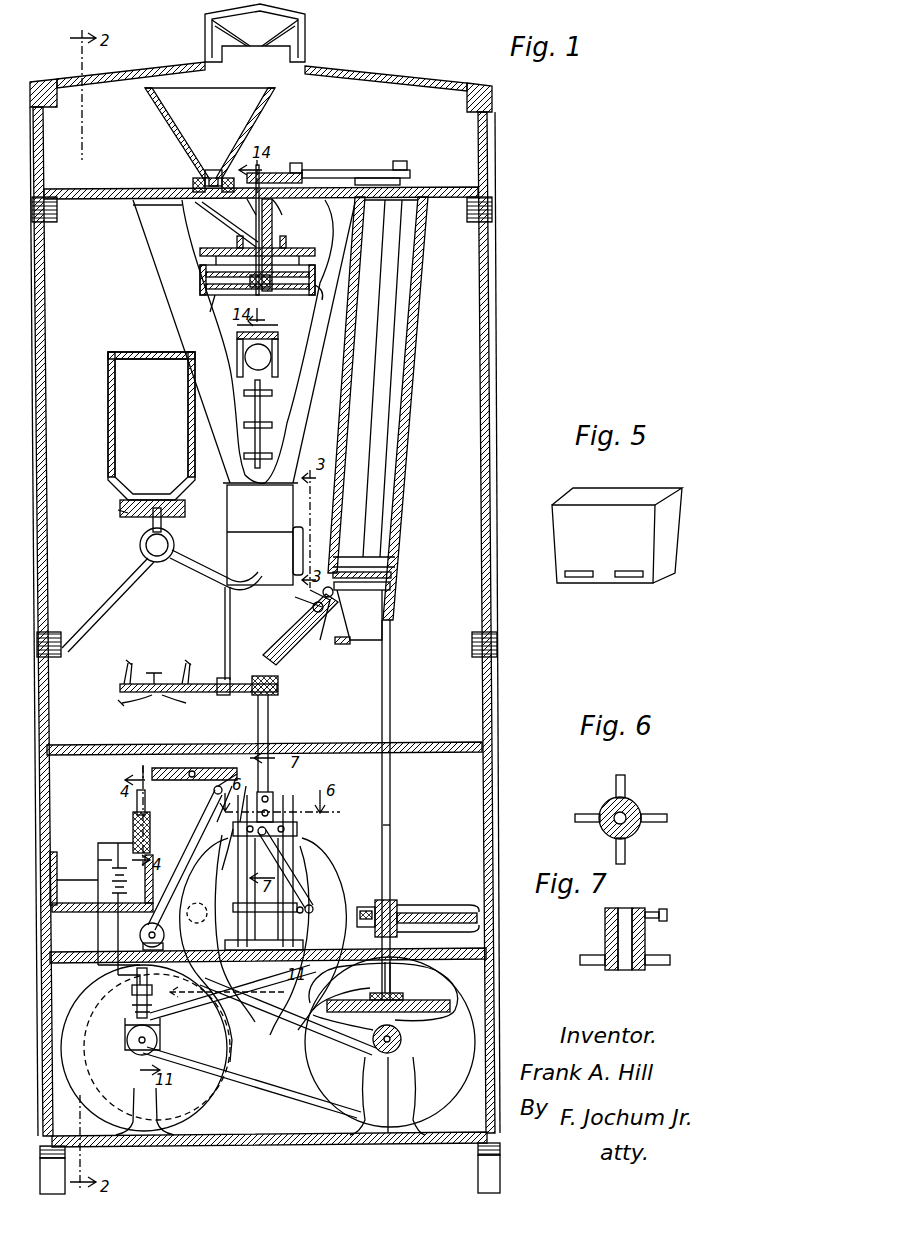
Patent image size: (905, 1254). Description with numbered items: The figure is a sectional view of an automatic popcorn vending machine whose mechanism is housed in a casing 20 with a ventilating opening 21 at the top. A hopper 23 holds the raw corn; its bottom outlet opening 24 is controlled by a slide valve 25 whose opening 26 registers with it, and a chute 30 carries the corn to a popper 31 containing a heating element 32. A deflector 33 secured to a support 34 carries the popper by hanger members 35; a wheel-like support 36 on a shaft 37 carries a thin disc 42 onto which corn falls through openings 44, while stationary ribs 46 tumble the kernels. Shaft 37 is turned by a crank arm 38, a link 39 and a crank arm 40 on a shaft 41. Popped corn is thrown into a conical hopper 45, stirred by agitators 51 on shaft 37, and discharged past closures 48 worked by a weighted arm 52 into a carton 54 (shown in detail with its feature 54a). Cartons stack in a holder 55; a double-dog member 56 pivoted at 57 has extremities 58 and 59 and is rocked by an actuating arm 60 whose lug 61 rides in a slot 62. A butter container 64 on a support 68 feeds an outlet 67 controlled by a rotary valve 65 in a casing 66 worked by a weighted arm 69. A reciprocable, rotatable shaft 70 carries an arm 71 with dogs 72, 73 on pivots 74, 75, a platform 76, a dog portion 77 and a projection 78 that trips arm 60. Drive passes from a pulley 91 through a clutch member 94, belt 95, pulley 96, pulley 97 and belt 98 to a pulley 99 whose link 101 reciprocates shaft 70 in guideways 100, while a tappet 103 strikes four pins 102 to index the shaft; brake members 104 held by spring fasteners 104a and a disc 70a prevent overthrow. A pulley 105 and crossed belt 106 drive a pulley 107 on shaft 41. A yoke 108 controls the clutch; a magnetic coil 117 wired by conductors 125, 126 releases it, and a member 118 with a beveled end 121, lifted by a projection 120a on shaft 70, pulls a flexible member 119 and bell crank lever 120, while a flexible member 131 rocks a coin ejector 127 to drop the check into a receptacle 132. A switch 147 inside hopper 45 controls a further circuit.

In FIG. 1, the casing 20 is at (494, 298).
In FIG. 1, the ventilating opening 21 is at (305, 41).
In FIG. 1, the hopper 23 is at (272, 100).
In FIG. 1, the outlet opening 24 is at (213, 170).
In FIG. 1, the slide valve 25 is at (193, 184).
In FIG. 1, the opening 26 is at (182, 207).
In FIG. 1, the chute 30 is at (212, 212).
In FIG. 1, the heater or popper 31 is at (200, 280).
In FIG. 1, the heating element 32 is at (263, 298).
In FIG. 1, the deflector 33 is at (200, 250).
In FIG. 1, the support 34 is at (280, 211).
In FIG. 1, the hanger members 35 is at (332, 260).
In FIG. 1, the support 36 is at (215, 295).
In FIG. 1, the shaft 37 is at (286, 238).
In FIG. 1, the crank arm 38 is at (282, 173).
In FIG. 1, the link 39 is at (350, 170).
In FIG. 1, the crank arm 40 is at (410, 176).
In FIG. 1, the shaft 41 is at (390, 668).
In FIG. 1, the disc like member 42 is at (318, 296).
In FIG. 1, the openings 44 is at (237, 240).
In FIG. 1, the hopper like formation 45 is at (135, 250).
In FIG. 1, the ribs or projections 46 is at (330, 275).
In FIG. 1, the closures 48 is at (258, 542).
In FIG. 1, the agitators 51 is at (246, 455).
In FIG. 1, the arm 52 is at (306, 555).
In FIG. 1, the carton 54 is at (392, 632).
In FIG. 5, the carton 54 is at (673, 530).
In FIG. 5, the cup slots 54a is at (620, 571).
In FIG. 1, the container or holder 55 is at (408, 408).
In FIG. 1, the member 56 is at (310, 595).
In FIG. 1, the pivot 57 is at (341, 613).
In FIG. 1, the extremity 58 is at (338, 590).
In FIG. 1, the extremity 59 is at (342, 645).
In FIG. 1, the actuating arm 60 is at (280, 654).
In FIG. 1, the lug or lateral projection 61 is at (320, 643).
In FIG. 1, the elongated slot 62 is at (308, 607).
In FIG. 1, the container 64 is at (108, 383).
In FIG. 1, the hollow rotary valve 65 is at (172, 540).
In FIG. 1, the casing 66 is at (168, 560).
In FIG. 1, the discharge outlet 67 is at (155, 500).
In FIG. 1, the support 68 is at (120, 512).
In FIG. 1, the arm 69 is at (222, 568).
In FIG. 1, the shaft 70 is at (270, 716).
In FIG. 6, the shaft 70 is at (636, 805).
In FIG. 1, the disc like member 70a is at (312, 909).
In FIG. 1, the arm or support 71 is at (210, 684).
In FIG. 1, the dog 72 is at (126, 670).
In FIG. 1, the dog 73 is at (195, 670).
In FIG. 1, the pivot 74 is at (142, 700).
In FIG. 1, the pivot 75 is at (172, 700).
In FIG. 1, the platform 76 is at (154, 670).
In FIG. 1, the portion 77 is at (118, 704).
In FIG. 1, the projection 78 is at (225, 625).
In FIG. 1, the pulley 91 is at (200, 1092).
In FIG. 1, the clutch member 94 is at (130, 1048).
In FIG. 1, the belt 95 is at (285, 1090).
In FIG. 1, the pulley 96 is at (455, 1088).
In FIG. 1, the pulley 97 is at (403, 1040).
In FIG. 1, the belt 98 is at (350, 1030).
In FIG. 1, the pulley 99 is at (335, 876).
In FIG. 1, the guideways 100 is at (283, 815).
In FIG. 1, the link 101 is at (285, 878).
In FIG. 6, the pins or arms 102 is at (630, 860).
In FIG. 7, the pins or arms 102 is at (655, 965).
In FIG. 1, the tappet or projection 103 is at (199, 923).
In FIG. 1, the brake members 104 is at (233, 832).
In FIG. 1, the spring fastening devices 104a is at (240, 836).
In FIG. 1, the pulley 105 is at (198, 1025).
In FIG. 1, the crossed belt 106 is at (432, 995).
In FIG. 1, the pulley 107 is at (420, 1006).
In FIG. 1, the yoke 108 is at (125, 1030).
In FIG. 1, the magnetic coil 117 is at (132, 990).
In FIG. 1, the member 118 is at (143, 770).
In FIG. 1, the flexible member 119 is at (192, 838).
In FIG. 1, the bell crank lever 120 is at (282, 795).
In FIG. 7, the projection 120a is at (660, 912).
In FIG. 1, the beveled extremity 121 is at (245, 775).
In FIG. 1, the conductor 125 is at (148, 862).
In FIG. 1, the conductor 126 is at (112, 843).
In FIG. 1, the coin arresting and ejecting member 127 is at (137, 800).
In FIG. 1, the flexible member 131 is at (160, 782).
In FIG. 1, the check receiving receptacle 132 is at (98, 914).
In FIG. 1, the circuit controlling switch 147 is at (266, 352).